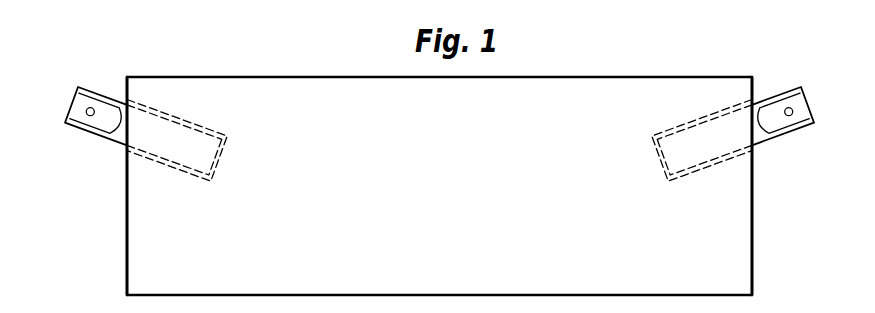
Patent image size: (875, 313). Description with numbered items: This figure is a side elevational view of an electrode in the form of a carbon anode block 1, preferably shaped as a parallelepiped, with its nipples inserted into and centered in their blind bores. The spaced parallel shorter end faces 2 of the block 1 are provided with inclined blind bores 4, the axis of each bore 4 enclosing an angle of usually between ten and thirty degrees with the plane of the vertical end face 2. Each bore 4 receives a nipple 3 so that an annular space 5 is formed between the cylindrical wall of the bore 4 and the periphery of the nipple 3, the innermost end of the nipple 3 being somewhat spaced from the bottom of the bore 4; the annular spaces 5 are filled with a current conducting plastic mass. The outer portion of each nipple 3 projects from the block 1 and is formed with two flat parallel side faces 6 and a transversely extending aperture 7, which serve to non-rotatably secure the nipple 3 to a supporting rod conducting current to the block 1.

The carbon anode block 1 is at (728, 260).
The end faces 2 is at (127, 220).
The nipple 3 is at (108, 140).
The blind bore 4 is at (160, 110).
The annular space 5 is at (153, 160).
The side faces 6 is at (78, 118).
The aperture 7 is at (89, 108).